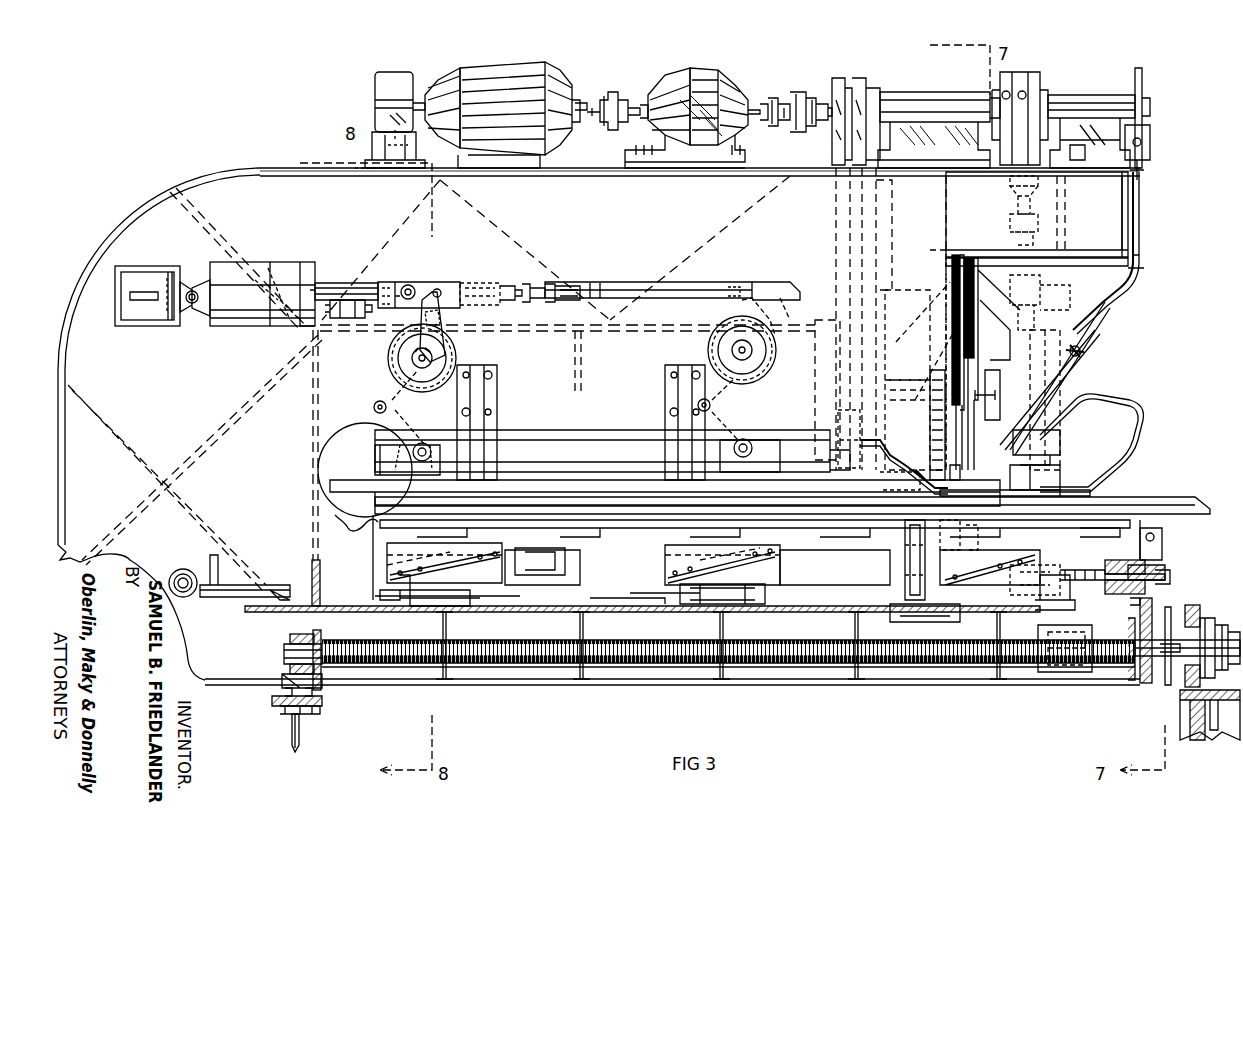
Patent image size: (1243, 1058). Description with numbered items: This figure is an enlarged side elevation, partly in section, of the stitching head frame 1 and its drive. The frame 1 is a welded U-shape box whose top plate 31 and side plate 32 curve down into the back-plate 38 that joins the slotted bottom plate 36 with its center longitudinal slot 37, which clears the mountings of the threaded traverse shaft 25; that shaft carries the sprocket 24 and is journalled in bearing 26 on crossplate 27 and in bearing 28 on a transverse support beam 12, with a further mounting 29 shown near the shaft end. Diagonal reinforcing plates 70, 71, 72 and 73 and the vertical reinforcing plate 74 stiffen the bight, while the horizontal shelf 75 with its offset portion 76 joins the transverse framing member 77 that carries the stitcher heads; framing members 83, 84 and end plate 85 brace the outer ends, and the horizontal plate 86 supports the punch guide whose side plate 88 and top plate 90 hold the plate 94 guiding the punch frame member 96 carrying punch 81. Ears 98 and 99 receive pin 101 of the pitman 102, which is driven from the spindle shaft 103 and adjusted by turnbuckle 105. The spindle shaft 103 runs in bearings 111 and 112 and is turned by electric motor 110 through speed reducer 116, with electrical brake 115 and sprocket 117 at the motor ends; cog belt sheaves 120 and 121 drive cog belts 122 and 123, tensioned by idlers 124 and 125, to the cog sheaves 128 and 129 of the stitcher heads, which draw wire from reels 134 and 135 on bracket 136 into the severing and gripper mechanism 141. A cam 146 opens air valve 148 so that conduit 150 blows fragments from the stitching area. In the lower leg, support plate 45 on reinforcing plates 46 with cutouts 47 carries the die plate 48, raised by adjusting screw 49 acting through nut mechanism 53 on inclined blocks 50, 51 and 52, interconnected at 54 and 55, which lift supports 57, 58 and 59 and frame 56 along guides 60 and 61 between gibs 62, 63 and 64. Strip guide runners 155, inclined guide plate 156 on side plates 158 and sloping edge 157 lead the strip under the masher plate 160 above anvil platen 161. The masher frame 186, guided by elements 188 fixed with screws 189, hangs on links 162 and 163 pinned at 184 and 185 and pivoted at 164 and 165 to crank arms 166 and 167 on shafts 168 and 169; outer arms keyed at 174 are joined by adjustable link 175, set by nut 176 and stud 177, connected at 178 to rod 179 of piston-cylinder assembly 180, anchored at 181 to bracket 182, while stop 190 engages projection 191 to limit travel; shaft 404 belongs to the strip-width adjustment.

The frame 1 is at (203, 170).
The transverse support beam 12 is at (302, 738).
The sprocket 24 is at (1178, 620).
The traverse shaft 25 is at (1135, 670).
The bearing 26 is at (1210, 625).
The crossplate 27 is at (1188, 695).
The bearing 28 is at (272, 672).
The bearing block 29 is at (1045, 672).
The top plate 31 is at (317, 170).
The side plate 32 is at (276, 185).
The bottom plate 36 is at (622, 680).
The center longitudinal slot 37 is at (788, 680).
The back-plate 38 is at (66, 480).
The support plate 45 is at (662, 608).
The reinforcing plates 46 is at (720, 618).
The U-shape cutout openings 47 is at (584, 622).
The die plate 48 is at (1150, 488).
The adjusting screw mechanism 49 is at (1168, 570).
The inclined support block 50 is at (380, 586).
The inclined support block 51 is at (786, 560).
The inclined support block 52 is at (1065, 548).
The way 53 is at (1052, 605).
The way 54 is at (838, 586).
The interconnection 55 is at (592, 586).
The frame 56 is at (380, 545).
The inclined support 57 is at (392, 566).
The inclined support 58 is at (668, 562).
The inclined support 59 is at (980, 552).
The vertical guide 60 is at (545, 560).
The vertical guide 61 is at (908, 562).
The gibs 62 is at (432, 604).
The gibs 63 is at (762, 604).
The gibs 64 is at (968, 606).
The diagonal reinforcing plate 70 is at (132, 445).
The diagonal reinforcing plate 71 is at (245, 405).
The diagonal reinforcing plate 72 is at (528, 230).
The diagonal reinforcing plate 73 is at (718, 226).
The vertical reinforcing plate 74 is at (312, 515).
The horizontal reinforcing shelf 75 is at (772, 322).
The lower offset portion 76 is at (822, 328).
The transverse framing member 77 is at (920, 385).
The punch 81 is at (1042, 470).
The transverse framing member 83 is at (955, 205).
The transverse framing member 84 is at (1066, 224).
The end plate 85 is at (1122, 226).
The horizontal plate 86 is at (1135, 252).
The side plate 88 is at (1085, 368).
The top plate 90 is at (1130, 285).
The plate 94 is at (1000, 372).
The punch frame member 96 is at (1045, 438).
The upstanding ear 98 is at (1000, 268).
The upstanding ear 99 is at (1040, 278).
The pin 101 is at (1066, 292).
The pitman 102 is at (1028, 72).
The spindle shaft 103 is at (876, 90).
The turnbuckle 105 is at (1015, 206).
The electric motor 110 is at (558, 72).
The spindle bearing 111 is at (958, 92).
The spindle bearing 112 is at (1080, 92).
The electrical brake 115 is at (380, 82).
The speed reducer unit 116 is at (694, 82).
The sprocket 117 is at (772, 95).
The cog belt sheave 120 is at (836, 88).
The cog belt sheave 121 is at (872, 90).
The cog belt 122 is at (836, 232).
The cog belt 123 is at (876, 224).
The idler 124 is at (830, 178).
The idler 125 is at (878, 184).
The cog sheave 128 is at (830, 452).
The cog sheave 129 is at (835, 412).
The wire reel 134 is at (952, 280).
The wire reel 135 is at (935, 345).
The bracket 136 is at (900, 290).
The severing and gripper mechanism 141 is at (962, 484).
The cam 146 is at (1142, 72).
The air valve 148 is at (1150, 140).
The conduit 150 is at (1110, 296).
The strip guide runner 155 is at (1132, 412).
The inclined guide plate 156 is at (915, 490).
The sloping front edge 157 is at (1090, 488).
The side plate 158 is at (856, 466).
The masher plate 160 is at (582, 486).
The anvil platen 161 is at (680, 486).
The links 162 is at (392, 445).
The links 163 is at (748, 438).
The pivot 164 is at (374, 408).
The pivot 165 is at (712, 408).
The crank arm 166 is at (395, 382).
The crank arm 167 is at (748, 380).
The transverse shaft 168 is at (435, 358).
The transverse shaft 169 is at (750, 350).
The key 174 is at (440, 345).
The adjustable link 175 is at (700, 282).
The nut 176 is at (530, 284).
The threaded stud 177 is at (534, 303).
The connection 178 is at (410, 290).
The rod 179 is at (340, 283).
The piston-cylinder assembly 180 is at (262, 318).
The connection 181 is at (192, 316).
The bracket 182 is at (134, 322).
The pin connection 184 is at (430, 478).
The pin connection 185 is at (748, 478).
The frame structure 186 is at (602, 451).
The guiding element 188 is at (490, 430).
The screw 189 is at (495, 375).
The stop 190 is at (350, 332).
The projection 191 is at (478, 305).
The shaft 404 is at (1155, 528).